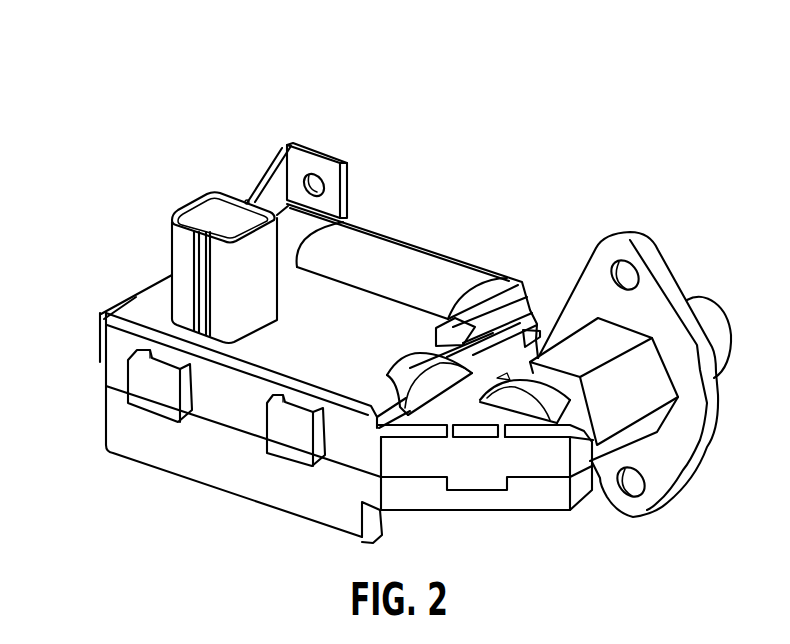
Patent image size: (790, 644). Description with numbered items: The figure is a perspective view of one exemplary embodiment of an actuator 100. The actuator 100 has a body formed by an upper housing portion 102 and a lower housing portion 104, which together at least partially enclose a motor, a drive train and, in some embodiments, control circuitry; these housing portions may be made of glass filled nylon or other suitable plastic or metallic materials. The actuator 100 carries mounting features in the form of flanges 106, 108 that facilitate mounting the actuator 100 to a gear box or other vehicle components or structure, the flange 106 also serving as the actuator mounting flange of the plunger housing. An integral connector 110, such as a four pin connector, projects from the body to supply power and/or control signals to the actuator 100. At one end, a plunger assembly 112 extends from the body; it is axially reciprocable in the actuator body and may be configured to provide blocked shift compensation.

The actuator 100 is at (90, 80).
The upper housing portion 102 is at (100, 320).
The lower housing portion 104 is at (103, 430).
The flange 106 is at (630, 240).
The flange 108 is at (332, 155).
The integral connector 110 is at (190, 202).
The plunger assembly 112 is at (705, 315).